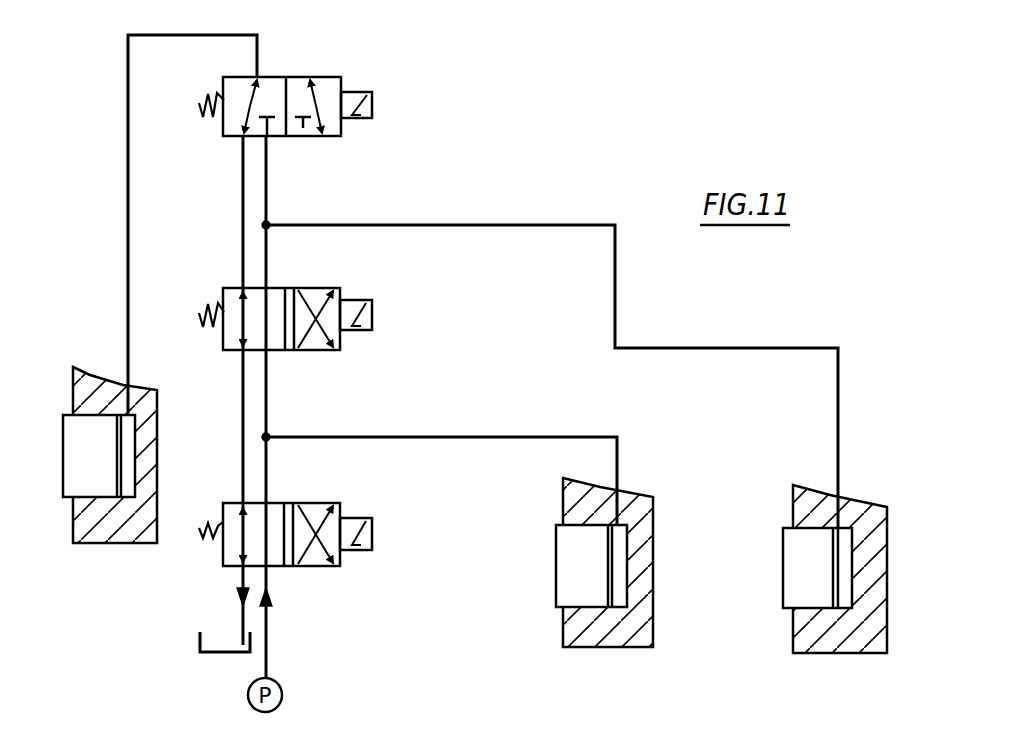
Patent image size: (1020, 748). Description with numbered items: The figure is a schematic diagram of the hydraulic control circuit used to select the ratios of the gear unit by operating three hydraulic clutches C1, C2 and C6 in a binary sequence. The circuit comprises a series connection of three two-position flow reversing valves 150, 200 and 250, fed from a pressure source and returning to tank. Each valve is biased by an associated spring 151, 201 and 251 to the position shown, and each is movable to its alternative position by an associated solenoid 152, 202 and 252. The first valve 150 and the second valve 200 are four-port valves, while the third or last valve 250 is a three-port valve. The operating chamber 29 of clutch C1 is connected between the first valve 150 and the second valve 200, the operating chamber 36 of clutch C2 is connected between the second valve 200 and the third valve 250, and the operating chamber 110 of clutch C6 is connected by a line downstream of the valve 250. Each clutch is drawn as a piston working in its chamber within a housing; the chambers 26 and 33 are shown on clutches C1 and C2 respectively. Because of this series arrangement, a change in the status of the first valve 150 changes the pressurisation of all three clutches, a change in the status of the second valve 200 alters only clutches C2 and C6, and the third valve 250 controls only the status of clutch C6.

The two-position flow reversing valve 250 is at (313, 138).
The spring 251 is at (199, 103).
The solenoid 252 is at (372, 118).
The two-position flow reversing valve 200 is at (289, 350).
The spring 201 is at (199, 313).
The solenoid 202 is at (372, 330).
The two-position flow reversing valve 150 is at (341, 566).
The spring 151 is at (199, 528).
The solenoid 152 is at (372, 548).
The operating chamber 110 is at (127, 438).
The hydraulically operated clutch C6 is at (101, 500).
The piston 26 is at (572, 540).
The operating chamber 29 is at (623, 570).
The hydraulic clutch C1 is at (580, 570).
The piston 33 is at (802, 540).
The operating chamber 36 is at (845, 556).
The hydraulic clutch C2 is at (806, 580).